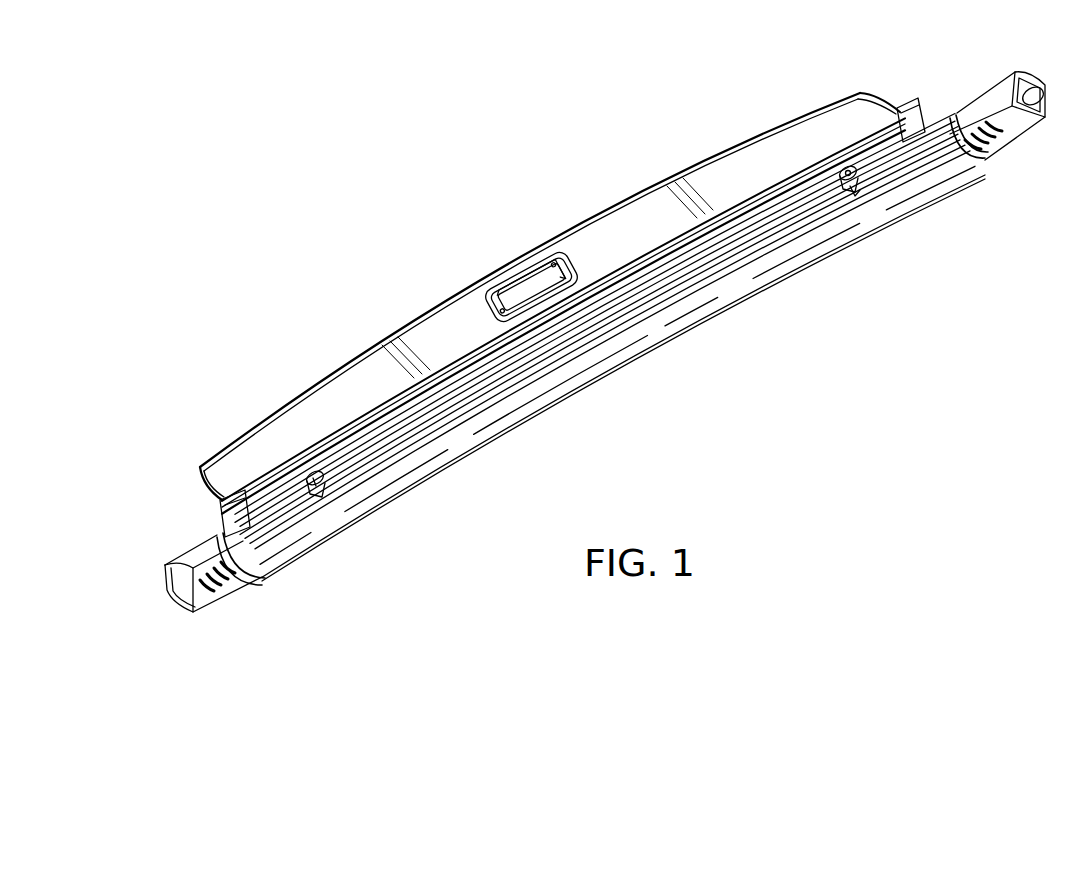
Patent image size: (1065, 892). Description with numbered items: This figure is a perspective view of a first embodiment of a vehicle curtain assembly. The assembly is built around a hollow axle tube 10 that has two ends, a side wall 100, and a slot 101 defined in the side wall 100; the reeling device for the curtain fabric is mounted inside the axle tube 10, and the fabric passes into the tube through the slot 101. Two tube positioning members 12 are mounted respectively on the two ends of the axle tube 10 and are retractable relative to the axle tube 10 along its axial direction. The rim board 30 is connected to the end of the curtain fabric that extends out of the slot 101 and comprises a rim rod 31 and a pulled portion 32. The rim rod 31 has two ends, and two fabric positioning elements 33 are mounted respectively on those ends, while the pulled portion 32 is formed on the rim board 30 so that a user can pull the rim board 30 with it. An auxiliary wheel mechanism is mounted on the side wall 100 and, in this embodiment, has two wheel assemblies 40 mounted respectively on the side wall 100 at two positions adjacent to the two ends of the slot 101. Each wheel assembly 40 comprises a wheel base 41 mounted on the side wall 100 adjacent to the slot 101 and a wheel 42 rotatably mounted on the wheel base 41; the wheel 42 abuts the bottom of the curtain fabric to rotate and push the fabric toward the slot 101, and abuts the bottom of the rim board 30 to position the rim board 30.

The axle tube 10 is at (775, 297).
The tube positioning member 12 is at (991, 86).
The rim board 30 is at (716, 142).
The rim rod 31 is at (863, 150).
The pulled portion 32 is at (520, 285).
The fabric positioning element 33 is at (930, 146).
The wheel assembly 40 is at (335, 492).
The wheel base 41 is at (864, 185).
The wheel 42 is at (836, 172).
The side wall 100 is at (800, 227).
The slot 101 is at (967, 120).